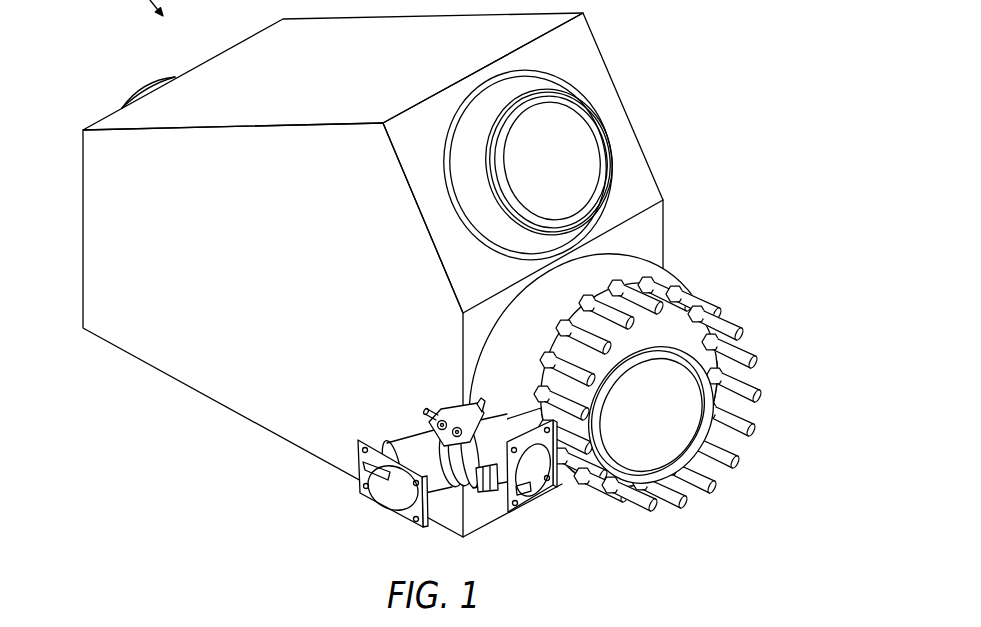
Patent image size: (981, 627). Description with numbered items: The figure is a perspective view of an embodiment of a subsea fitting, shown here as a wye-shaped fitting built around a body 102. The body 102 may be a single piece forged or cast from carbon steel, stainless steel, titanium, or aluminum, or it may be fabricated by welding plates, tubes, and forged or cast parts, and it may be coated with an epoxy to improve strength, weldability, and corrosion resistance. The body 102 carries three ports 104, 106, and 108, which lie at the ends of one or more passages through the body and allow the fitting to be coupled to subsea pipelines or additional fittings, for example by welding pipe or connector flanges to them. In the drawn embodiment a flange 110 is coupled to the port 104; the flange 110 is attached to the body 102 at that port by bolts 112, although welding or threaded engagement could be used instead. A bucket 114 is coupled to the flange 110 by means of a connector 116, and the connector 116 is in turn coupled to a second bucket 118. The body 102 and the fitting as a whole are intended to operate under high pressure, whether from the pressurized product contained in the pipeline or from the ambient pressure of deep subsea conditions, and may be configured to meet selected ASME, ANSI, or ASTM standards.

The body 102 is at (259, 267).
The port 104 is at (680, 453).
The port 106 is at (142, 93).
The port 108 is at (610, 134).
The flange 110 is at (638, 255).
The bolts 112 is at (723, 312).
The bucket 114 is at (377, 498).
The connector 116 is at (441, 403).
The bucket 118 is at (517, 507).